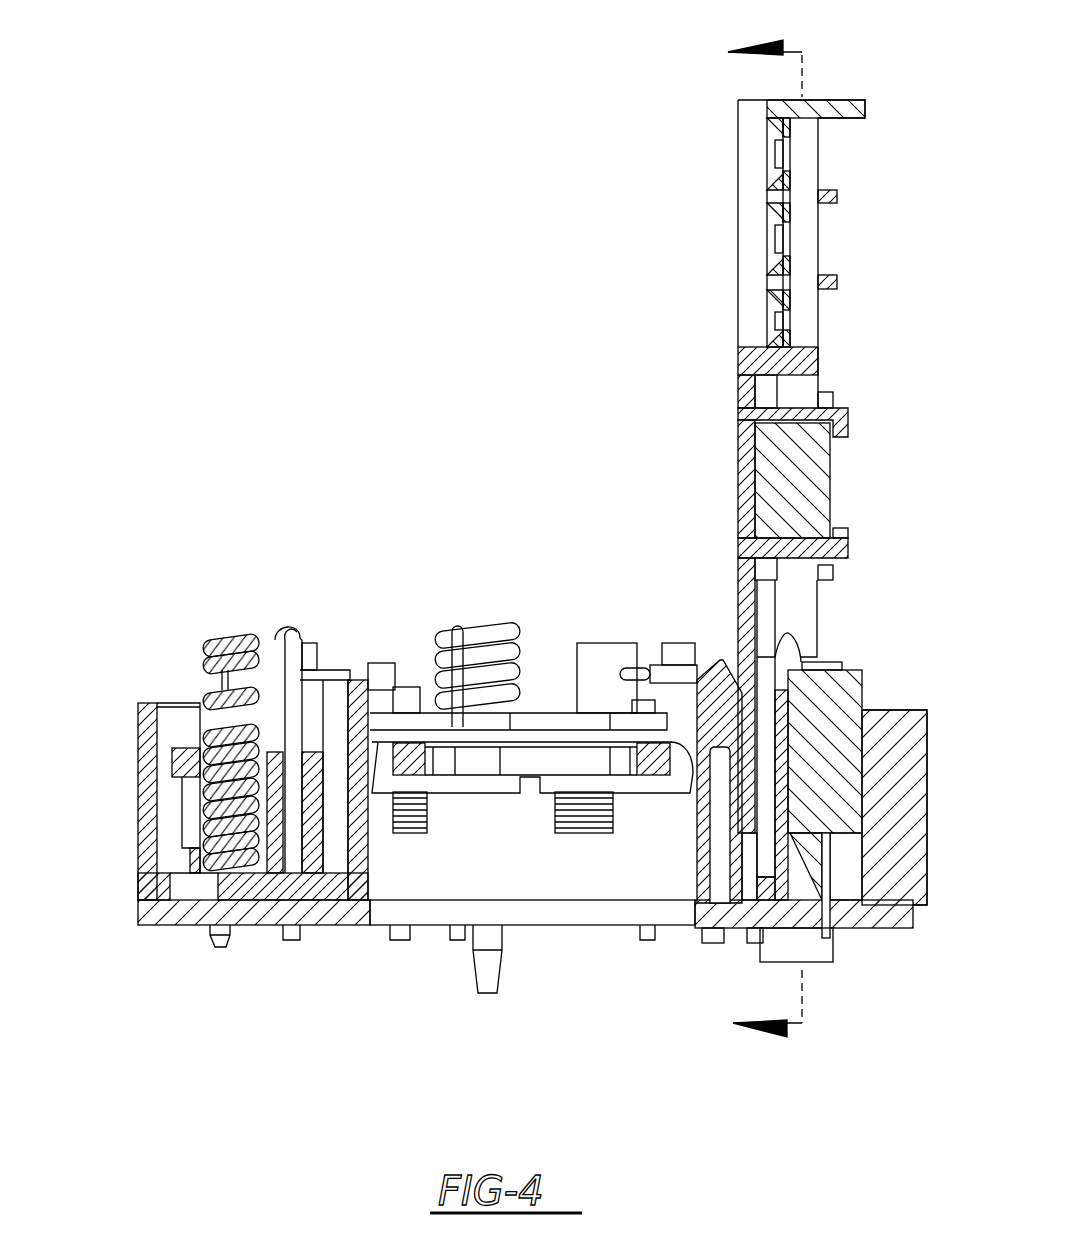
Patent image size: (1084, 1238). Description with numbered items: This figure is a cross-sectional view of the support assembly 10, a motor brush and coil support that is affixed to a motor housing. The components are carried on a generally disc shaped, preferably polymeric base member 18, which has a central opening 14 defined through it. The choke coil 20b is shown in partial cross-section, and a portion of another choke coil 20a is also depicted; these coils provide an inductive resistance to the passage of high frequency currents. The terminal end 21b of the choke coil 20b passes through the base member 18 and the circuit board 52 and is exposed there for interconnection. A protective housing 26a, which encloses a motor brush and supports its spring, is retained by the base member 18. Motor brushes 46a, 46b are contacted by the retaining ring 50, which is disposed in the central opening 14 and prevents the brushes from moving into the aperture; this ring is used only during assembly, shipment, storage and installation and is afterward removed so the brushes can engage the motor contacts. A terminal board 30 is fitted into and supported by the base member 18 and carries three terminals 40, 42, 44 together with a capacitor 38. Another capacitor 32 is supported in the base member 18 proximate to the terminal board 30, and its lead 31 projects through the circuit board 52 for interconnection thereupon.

The support assembly 10 is at (300, 530).
The central opening 14 is at (495, 886).
The base member 18 is at (137, 762).
The choke coil 20a is at (496, 652).
The choke coil 20b is at (200, 633).
The terminal end 21b is at (227, 947).
The protective housing 26a is at (680, 757).
The terminal board 30 is at (835, 100).
The lead 31 is at (835, 935).
The capacitor 32 is at (850, 702).
The capacitor 38 is at (810, 470).
The terminal 40 is at (782, 175).
The terminal 42 is at (785, 250).
The terminal 44 is at (787, 322).
The motor brush 46a is at (568, 836).
The motor brush 46b is at (408, 836).
The retaining ring 50 is at (602, 755).
The circuit board 52 is at (163, 913).